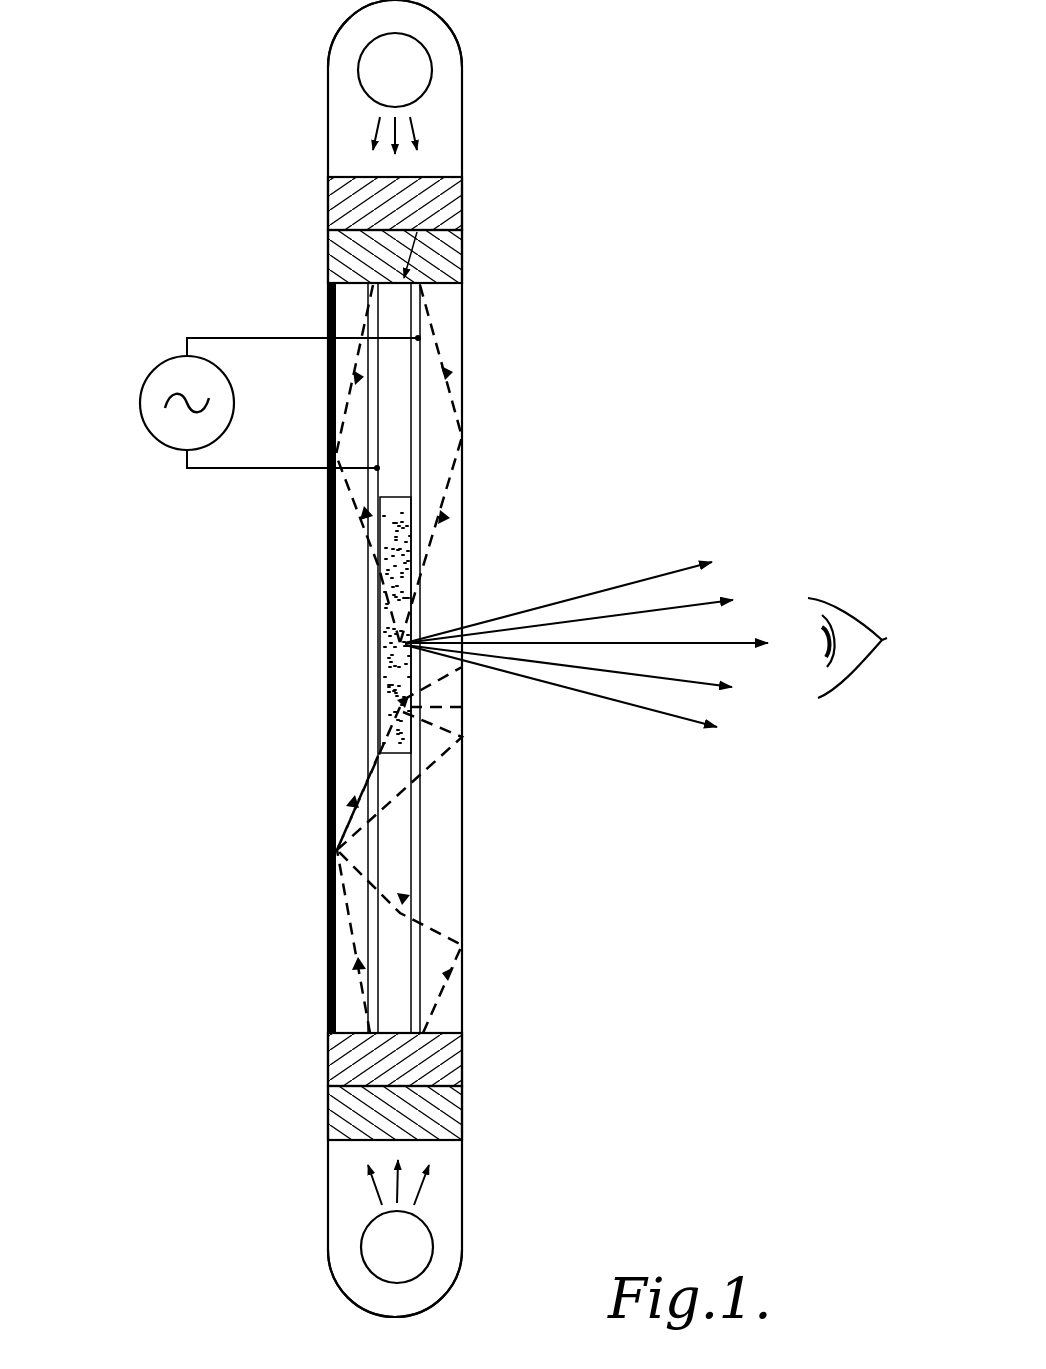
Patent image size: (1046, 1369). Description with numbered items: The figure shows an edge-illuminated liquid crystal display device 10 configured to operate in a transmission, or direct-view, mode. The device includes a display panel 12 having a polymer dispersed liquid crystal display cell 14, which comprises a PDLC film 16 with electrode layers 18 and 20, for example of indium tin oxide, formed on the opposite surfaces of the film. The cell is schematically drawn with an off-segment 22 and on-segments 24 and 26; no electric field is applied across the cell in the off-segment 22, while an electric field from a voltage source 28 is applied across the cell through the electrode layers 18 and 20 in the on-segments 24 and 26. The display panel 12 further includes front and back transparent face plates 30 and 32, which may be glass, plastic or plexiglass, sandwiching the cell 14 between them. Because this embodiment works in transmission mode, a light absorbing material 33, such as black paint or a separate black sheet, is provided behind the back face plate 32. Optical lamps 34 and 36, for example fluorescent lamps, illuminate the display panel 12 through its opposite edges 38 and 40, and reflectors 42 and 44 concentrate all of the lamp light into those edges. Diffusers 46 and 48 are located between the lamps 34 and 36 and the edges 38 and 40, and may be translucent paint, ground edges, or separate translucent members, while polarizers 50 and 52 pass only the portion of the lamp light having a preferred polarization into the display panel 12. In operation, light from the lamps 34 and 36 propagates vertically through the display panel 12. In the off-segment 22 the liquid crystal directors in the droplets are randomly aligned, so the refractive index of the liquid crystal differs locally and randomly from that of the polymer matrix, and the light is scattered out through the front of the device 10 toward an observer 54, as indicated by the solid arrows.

The liquid crystal display device 10 is at (473, 658).
The display panel 12 is at (552, 385).
The polymer dispersed liquid crystal display cell 14 is at (428, 400).
The PDLC film 16 is at (398, 858).
The electrode layer 18 is at (417, 907).
The electrode layer 20 is at (377, 980).
The off-segment 22 is at (387, 613).
The on-segment 24 is at (383, 475).
The on-segment 26 is at (389, 913).
The voltage source 28 is at (158, 365).
The front transparent face plate 30 is at (448, 552).
The back transparent face plate 32 is at (342, 770).
The light absorbing material 33 is at (338, 680).
The optical lamp 34 is at (410, 70).
The optical lamp 36 is at (403, 1240).
The edge 38 is at (452, 197).
The edge 40 is at (400, 1040).
The reflector 42 is at (460, 42).
The reflector 44 is at (463, 1267).
The diffuser 46 is at (457, 263).
The diffuser 48 is at (463, 1062).
The polarizer 50 is at (333, 192).
The polarizer 52 is at (343, 1112).
The observer 54 is at (812, 600).